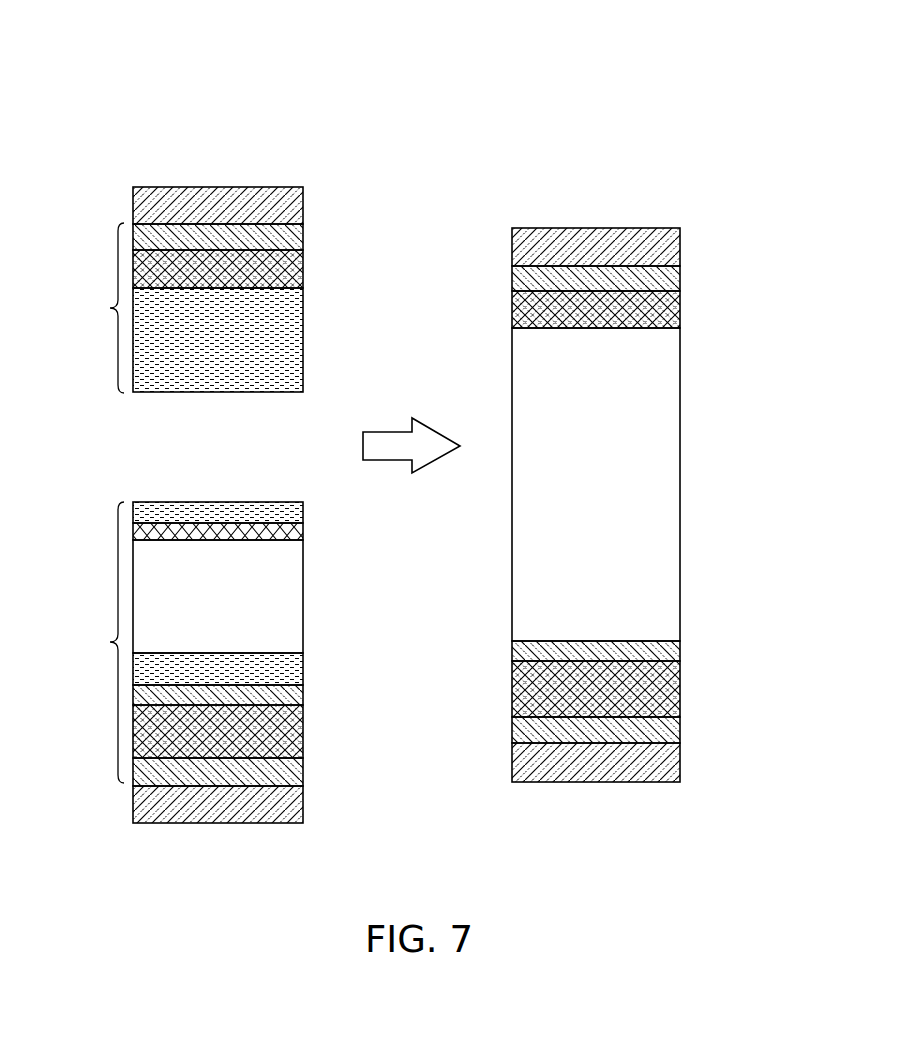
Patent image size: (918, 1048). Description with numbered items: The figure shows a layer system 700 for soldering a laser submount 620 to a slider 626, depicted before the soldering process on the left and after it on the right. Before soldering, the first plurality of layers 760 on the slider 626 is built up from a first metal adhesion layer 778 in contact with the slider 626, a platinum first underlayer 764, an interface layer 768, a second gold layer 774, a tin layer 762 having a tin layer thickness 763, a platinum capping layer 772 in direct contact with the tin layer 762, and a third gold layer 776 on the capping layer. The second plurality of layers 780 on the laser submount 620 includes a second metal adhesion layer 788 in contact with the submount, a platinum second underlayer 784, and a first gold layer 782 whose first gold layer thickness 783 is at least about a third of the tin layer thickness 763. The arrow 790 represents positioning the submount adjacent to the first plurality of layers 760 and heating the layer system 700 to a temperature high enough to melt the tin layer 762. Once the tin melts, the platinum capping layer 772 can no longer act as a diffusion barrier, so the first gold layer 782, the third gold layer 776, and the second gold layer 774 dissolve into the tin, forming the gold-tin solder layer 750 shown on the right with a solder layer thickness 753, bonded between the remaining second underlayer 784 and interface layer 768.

The layer system 700 is at (517, 58).
The laser submount 620 is at (288, 203).
The slider 626 is at (290, 813).
The second metal adhesion layer 788 is at (288, 240).
The second underlayer 784 is at (290, 275).
The first gold layer 782 is at (290, 305).
The first gold layer thickness 783 is at (166, 298).
The second plurality of layers 780 is at (93, 308).
The arrow 790 is at (420, 445).
The third gold layer 776 is at (290, 507).
The platinum capping layer 772 is at (290, 533).
The tin layer thickness 763 is at (166, 550).
The tin layer 762 is at (290, 600).
The first plurality of layers 760 is at (93, 642).
The second gold layer 774 is at (290, 663).
The interface layer 768 is at (290, 695).
The first underlayer 764 is at (290, 733).
The first metal adhesion layer 778 is at (290, 775).
The gold-tin solder layer 750 is at (663, 453).
The solder layer thickness 753 is at (537, 338).